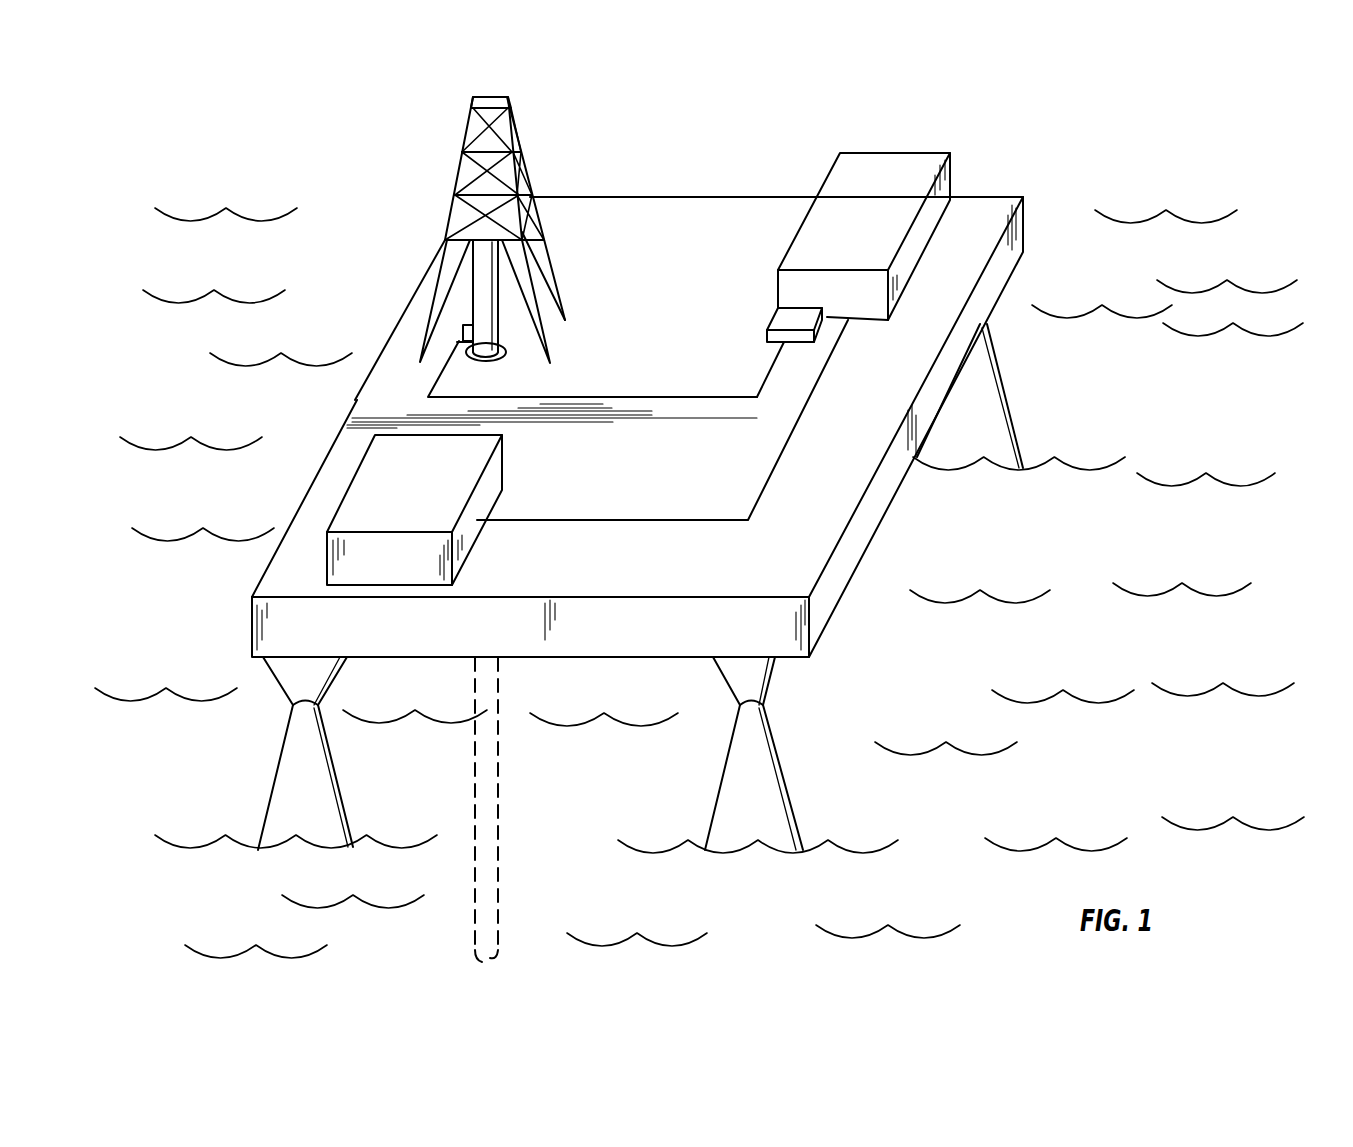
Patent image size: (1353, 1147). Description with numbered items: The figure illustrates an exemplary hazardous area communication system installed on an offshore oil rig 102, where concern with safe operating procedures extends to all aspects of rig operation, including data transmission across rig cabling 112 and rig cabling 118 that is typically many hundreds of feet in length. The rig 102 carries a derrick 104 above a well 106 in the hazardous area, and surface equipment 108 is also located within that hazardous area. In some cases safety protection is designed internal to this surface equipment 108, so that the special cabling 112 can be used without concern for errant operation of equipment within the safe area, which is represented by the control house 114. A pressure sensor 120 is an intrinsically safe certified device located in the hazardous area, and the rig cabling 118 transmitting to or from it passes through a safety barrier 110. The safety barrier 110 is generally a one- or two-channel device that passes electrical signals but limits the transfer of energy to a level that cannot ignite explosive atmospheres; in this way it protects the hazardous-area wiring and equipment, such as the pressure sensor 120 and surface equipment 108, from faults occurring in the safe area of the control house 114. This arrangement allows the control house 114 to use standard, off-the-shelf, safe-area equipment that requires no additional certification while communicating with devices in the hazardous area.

The offshore oil rig 102 is at (708, 193).
The derrick 104 is at (528, 153).
The well / wellbore 106 is at (500, 737).
The surface equipment 108 is at (505, 462).
The safety barrier 110 is at (822, 330).
The rig cabling 112 is at (785, 450).
The control house 114 is at (777, 284).
The rig cabling 118 is at (677, 400).
The pressure sensor 120 is at (457, 330).